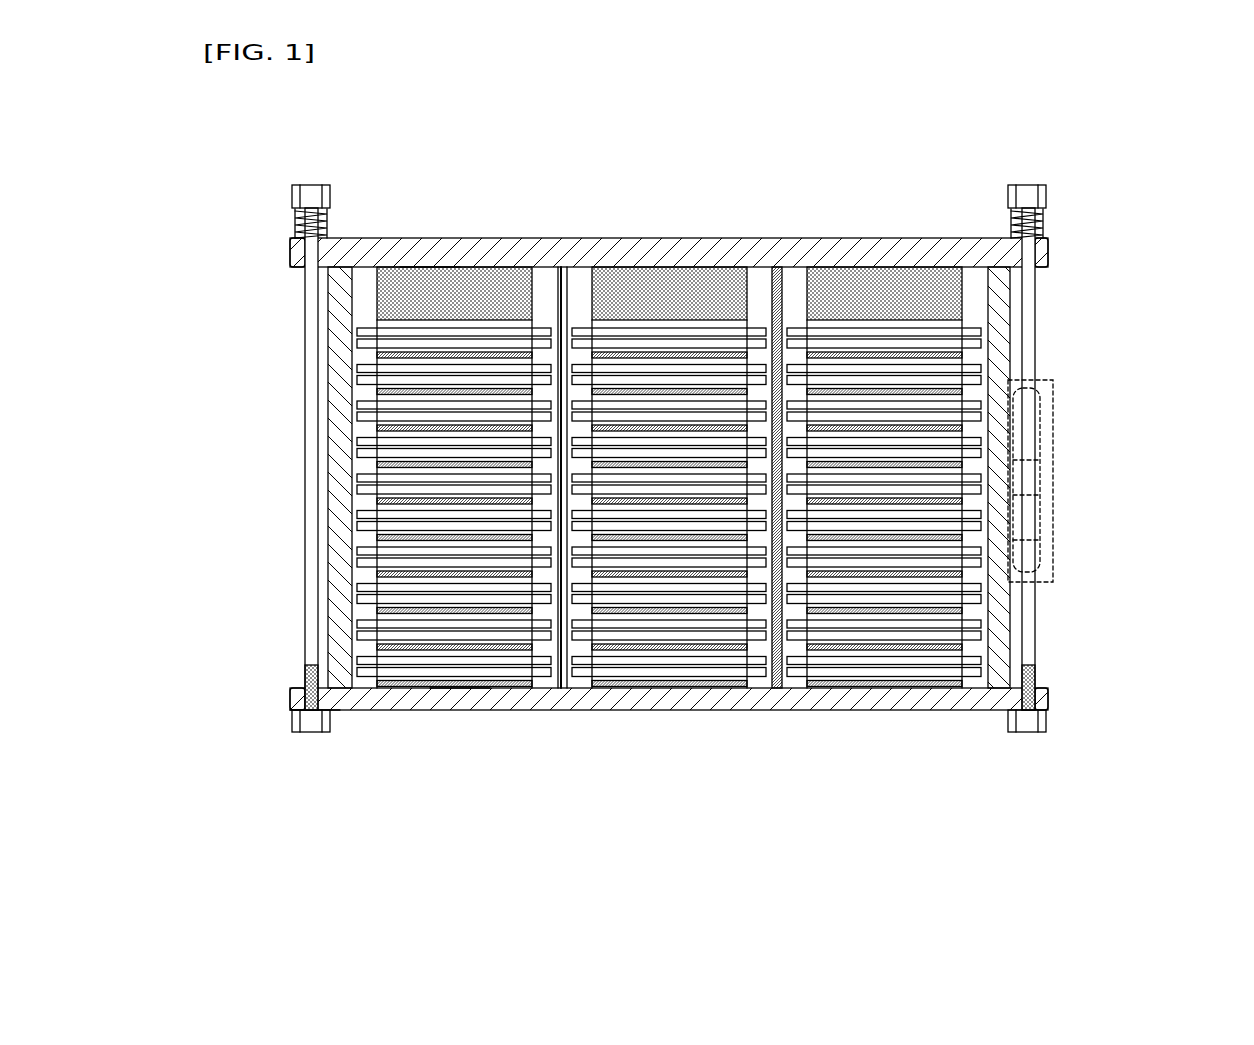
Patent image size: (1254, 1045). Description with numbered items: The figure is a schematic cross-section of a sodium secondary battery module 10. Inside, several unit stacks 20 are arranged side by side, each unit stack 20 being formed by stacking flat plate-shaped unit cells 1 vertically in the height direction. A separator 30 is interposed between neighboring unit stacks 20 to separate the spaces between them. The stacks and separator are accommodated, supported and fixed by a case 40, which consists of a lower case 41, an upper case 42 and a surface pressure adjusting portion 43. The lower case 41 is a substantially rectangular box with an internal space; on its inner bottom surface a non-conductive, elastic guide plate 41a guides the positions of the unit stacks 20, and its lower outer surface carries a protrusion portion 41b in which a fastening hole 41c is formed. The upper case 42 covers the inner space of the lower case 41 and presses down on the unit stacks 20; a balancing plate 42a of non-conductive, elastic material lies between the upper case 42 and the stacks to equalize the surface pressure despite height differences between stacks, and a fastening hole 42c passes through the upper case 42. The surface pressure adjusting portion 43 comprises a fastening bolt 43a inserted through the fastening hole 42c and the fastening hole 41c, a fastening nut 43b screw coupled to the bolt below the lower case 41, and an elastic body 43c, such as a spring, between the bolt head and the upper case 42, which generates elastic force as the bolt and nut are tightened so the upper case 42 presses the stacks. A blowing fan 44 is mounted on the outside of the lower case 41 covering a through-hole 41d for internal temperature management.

The unit cell 1 is at (359, 333).
The sodium secondary battery module 10 is at (672, 122).
The unit stack 20 is at (359, 503).
The separator 30 is at (568, 302).
The case 40 is at (902, 229).
The lower case 41 is at (638, 712).
The guide plate 41a is at (460, 695).
The protrusion portion 41b is at (290, 690).
The fastening hole 41c is at (290, 710).
The through-hole 41d is at (1003, 518).
The upper case 42 is at (511, 238).
The balancing plate 42a is at (428, 262).
The fastening hole 42c is at (332, 214).
The surface pressure adjusting portion 43 is at (676, 466).
The fastening bolt 43a is at (305, 292).
The fastening nut 43b is at (302, 733).
The elastic body 43c is at (296, 220).
The blowing fan 44 is at (1063, 380).